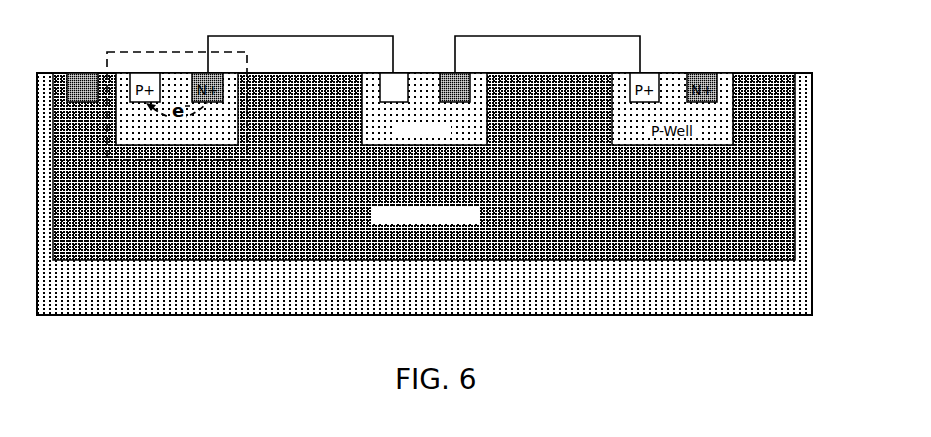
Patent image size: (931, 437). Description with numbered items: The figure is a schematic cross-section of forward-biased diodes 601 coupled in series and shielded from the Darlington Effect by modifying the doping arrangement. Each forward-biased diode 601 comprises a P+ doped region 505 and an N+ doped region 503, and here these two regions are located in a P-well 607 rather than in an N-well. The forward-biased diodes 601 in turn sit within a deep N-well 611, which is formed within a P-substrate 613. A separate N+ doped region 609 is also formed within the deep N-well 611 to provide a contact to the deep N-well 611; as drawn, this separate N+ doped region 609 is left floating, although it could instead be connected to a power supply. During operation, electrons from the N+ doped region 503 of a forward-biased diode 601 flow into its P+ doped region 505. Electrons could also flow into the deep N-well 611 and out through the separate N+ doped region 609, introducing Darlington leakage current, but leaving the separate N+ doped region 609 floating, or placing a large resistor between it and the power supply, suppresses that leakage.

The forward-biased diode 601 is at (248, 64).
The N+ doped region 503 is at (463, 73).
The P+ doped region 505 is at (400, 73).
The P-well 607 is at (487, 117).
The separate N+ doped region 609 is at (82, 75).
The deep N-well 611 is at (783, 157).
The P-substrate 613 is at (789, 300).